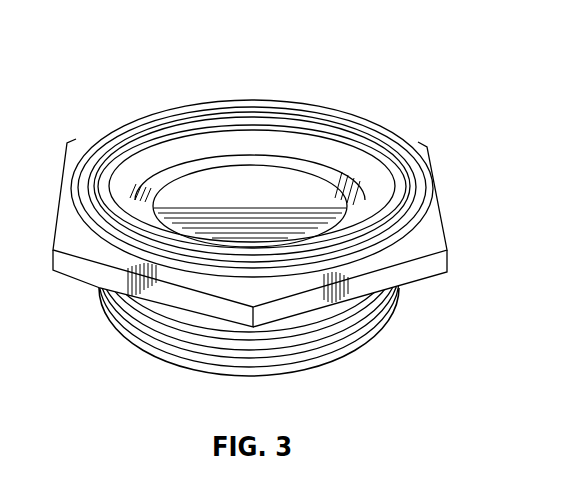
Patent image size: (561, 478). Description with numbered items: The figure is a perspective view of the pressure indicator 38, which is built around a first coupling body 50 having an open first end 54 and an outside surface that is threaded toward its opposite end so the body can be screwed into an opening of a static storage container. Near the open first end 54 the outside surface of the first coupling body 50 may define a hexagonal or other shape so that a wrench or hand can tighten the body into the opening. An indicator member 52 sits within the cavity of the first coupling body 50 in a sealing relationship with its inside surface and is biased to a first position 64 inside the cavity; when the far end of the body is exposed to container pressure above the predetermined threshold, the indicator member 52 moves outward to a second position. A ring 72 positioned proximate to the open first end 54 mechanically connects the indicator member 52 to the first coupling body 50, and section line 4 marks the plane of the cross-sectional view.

The pressure indicator 38 is at (427, 54).
The first coupling body 50 is at (428, 148).
The indicator member 52 is at (243, 193).
The open first end 54 is at (84, 148).
The first position 64 is at (180, 224).
The ring 72 is at (380, 141).
The section line 4- 4 is at (167, 107).